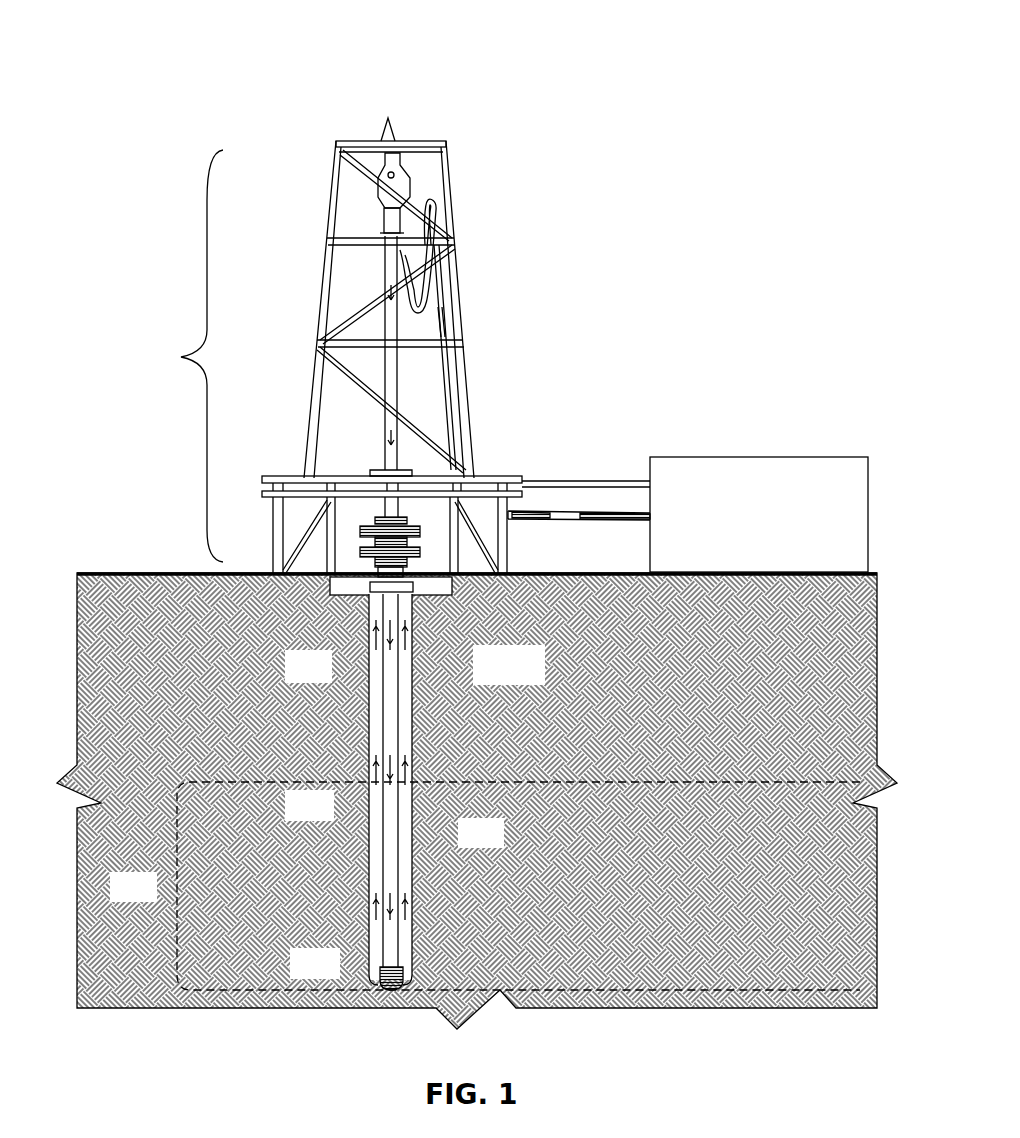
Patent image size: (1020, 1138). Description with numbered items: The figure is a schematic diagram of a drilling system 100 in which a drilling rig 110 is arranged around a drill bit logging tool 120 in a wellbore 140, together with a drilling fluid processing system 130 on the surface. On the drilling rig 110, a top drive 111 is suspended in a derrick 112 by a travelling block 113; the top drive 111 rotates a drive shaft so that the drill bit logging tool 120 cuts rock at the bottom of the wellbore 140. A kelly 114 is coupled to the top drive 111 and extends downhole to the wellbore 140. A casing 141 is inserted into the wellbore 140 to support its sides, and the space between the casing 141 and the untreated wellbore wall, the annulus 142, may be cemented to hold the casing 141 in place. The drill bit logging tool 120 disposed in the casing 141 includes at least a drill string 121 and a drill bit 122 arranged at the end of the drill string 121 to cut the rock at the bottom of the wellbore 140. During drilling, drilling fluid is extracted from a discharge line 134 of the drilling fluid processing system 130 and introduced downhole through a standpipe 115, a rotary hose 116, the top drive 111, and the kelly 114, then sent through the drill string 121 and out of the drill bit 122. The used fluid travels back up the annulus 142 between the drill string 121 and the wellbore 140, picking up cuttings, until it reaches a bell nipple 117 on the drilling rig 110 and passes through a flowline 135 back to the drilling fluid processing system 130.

The drilling system 100 is at (137, 53).
The drilling rig 110 is at (329, 345).
The top drive 111 is at (385, 262).
The derrick 112 is at (328, 235).
The travelling block 113 is at (384, 195).
The kelly 114 is at (385, 330).
The standpipe 115 is at (452, 360).
The rotary hose 116 is at (428, 290).
The bell nipple 117 is at (380, 508).
The drill bit logging tool 120 is at (177, 895).
The drill string 121 is at (390, 832).
The drill bit 122 is at (378, 975).
The drilling fluid processing system 130 is at (781, 526).
The discharge line 134 is at (545, 482).
The flowline 135 is at (597, 510).
The wellbore 140 is at (530, 679).
The casing 141 is at (369, 690).
The annulus 142 is at (405, 860).